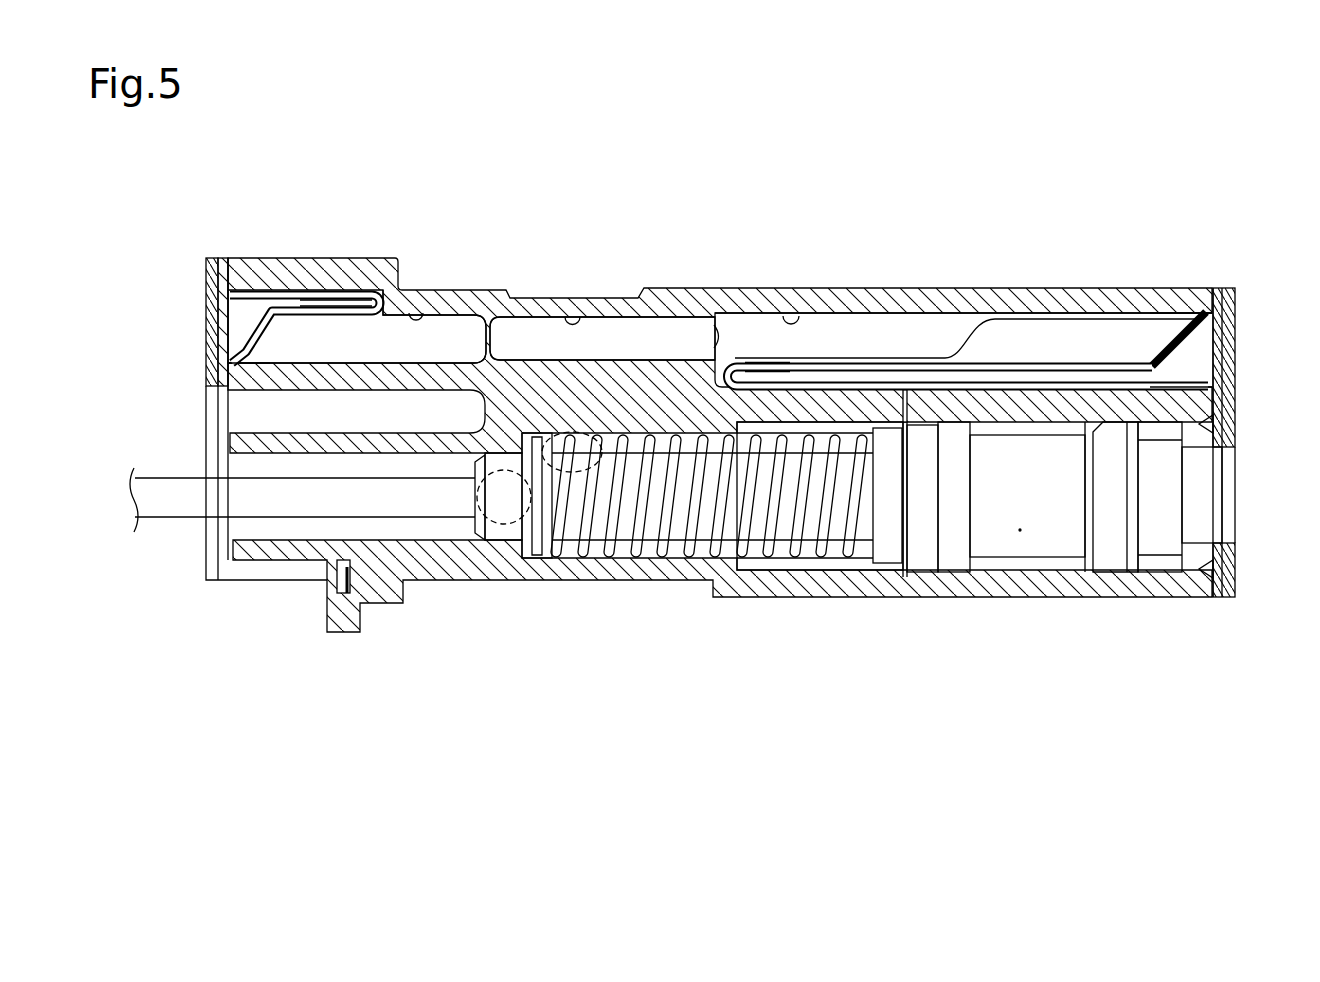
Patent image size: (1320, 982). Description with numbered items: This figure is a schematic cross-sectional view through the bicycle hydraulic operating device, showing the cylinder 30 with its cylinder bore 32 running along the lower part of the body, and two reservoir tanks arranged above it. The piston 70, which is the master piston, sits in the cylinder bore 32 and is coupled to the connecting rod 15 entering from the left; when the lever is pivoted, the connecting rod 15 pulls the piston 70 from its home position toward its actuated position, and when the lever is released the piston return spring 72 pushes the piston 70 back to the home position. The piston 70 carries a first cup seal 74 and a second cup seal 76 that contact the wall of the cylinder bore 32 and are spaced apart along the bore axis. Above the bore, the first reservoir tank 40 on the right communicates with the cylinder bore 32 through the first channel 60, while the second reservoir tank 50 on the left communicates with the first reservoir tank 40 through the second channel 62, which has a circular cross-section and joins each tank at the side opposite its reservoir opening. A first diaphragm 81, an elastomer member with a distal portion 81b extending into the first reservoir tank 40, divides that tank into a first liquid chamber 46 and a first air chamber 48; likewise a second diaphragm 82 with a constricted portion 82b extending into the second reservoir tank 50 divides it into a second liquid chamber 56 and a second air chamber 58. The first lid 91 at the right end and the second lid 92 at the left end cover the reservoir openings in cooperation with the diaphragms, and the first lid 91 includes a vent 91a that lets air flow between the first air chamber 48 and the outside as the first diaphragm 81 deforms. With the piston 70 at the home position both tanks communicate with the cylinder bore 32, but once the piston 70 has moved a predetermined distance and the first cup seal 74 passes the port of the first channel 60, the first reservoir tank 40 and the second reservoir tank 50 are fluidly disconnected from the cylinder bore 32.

The connecting rod 15 is at (166, 500).
The cylinder 30 is at (760, 590).
The cylinder bore 32 is at (807, 562).
The first reservoir tank 40 is at (790, 316).
The first liquid chamber 46 is at (834, 352).
The first air chamber 48 is at (1175, 377).
The second reservoir tank 50 is at (420, 313).
The second liquid chamber 56 is at (431, 350).
The second air chamber 58 is at (222, 325).
The first channel 60 is at (888, 398).
The second channel 62 is at (573, 318).
The piston 70 is at (1047, 546).
The piston return spring 72 is at (628, 553).
The first cup seal 74 is at (928, 550).
The second cup seal 76 is at (1147, 529).
The first diaphragm 81 is at (1173, 316).
The distal portion 81b is at (763, 363).
The second diaphragm 82 is at (271, 291).
The constricted portion 82b is at (350, 303).
The first lid 91 is at (1218, 290).
The vent 91a is at (1237, 358).
The second lid 92 is at (216, 260).